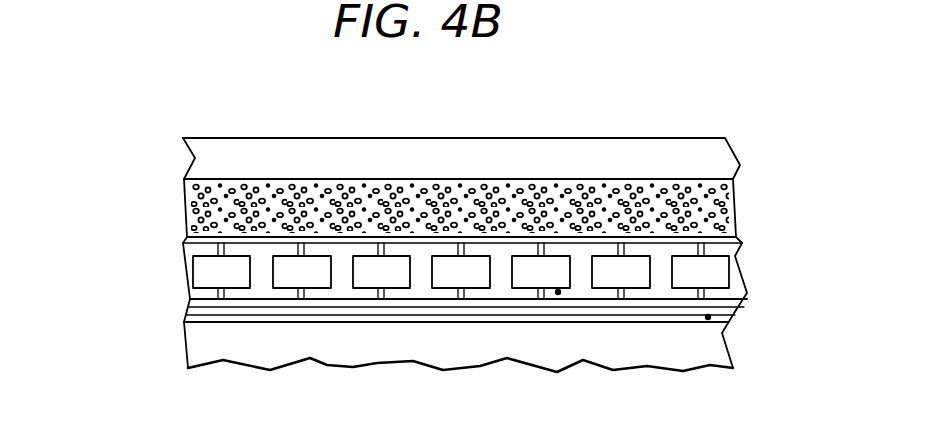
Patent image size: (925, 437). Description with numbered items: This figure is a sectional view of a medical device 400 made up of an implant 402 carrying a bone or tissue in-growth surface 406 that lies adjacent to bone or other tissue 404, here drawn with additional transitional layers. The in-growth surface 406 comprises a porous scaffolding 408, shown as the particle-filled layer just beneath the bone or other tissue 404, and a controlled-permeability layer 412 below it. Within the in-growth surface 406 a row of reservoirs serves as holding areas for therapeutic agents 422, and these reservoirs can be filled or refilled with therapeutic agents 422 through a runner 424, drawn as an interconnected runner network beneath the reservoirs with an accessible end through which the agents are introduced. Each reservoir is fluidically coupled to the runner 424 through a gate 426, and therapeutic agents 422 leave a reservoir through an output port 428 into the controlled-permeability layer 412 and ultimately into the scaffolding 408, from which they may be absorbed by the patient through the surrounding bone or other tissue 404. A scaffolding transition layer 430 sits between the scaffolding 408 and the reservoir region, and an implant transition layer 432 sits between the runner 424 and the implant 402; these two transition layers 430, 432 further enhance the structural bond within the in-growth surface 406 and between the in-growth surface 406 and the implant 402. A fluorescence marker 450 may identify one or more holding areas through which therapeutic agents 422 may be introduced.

The medical device 400 is at (87, 177).
The implant 402 is at (717, 348).
The bone or other tissue 404 is at (190, 157).
The bone or tissue in-growth surface 406 is at (167, 177).
The scaffolding 408 is at (627, 195).
The controlled-permeability layer 412 is at (727, 250).
The therapeutic agents 422 is at (362, 268).
The runner 424 is at (664, 300).
The gate 426 is at (378, 290).
The output port 428 is at (465, 255).
The scaffolding transition layer 430 is at (740, 238).
The implant transition layer 432 is at (737, 322).
The fluorescence marker 450 is at (558, 294).